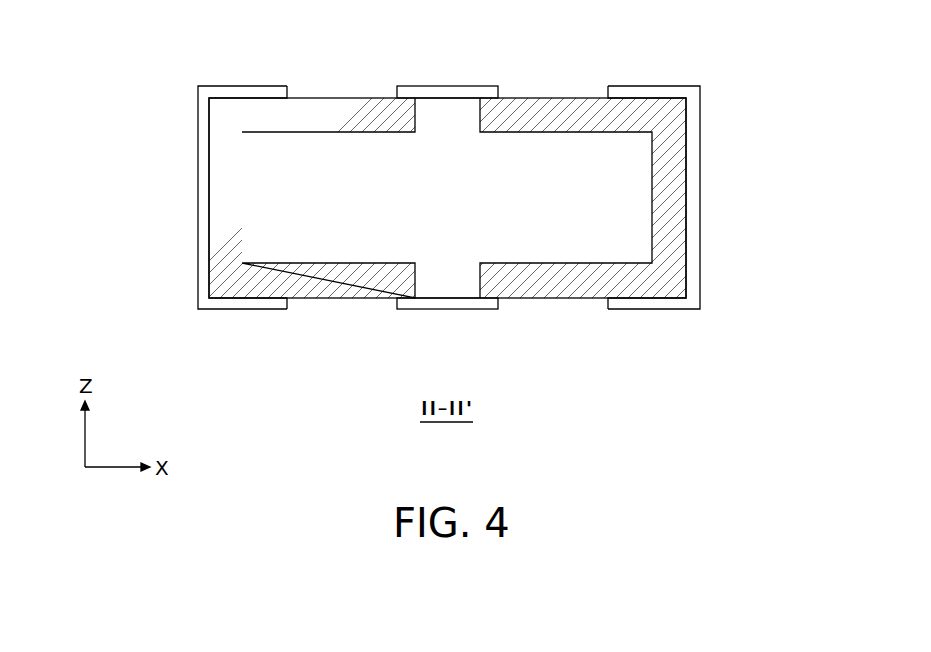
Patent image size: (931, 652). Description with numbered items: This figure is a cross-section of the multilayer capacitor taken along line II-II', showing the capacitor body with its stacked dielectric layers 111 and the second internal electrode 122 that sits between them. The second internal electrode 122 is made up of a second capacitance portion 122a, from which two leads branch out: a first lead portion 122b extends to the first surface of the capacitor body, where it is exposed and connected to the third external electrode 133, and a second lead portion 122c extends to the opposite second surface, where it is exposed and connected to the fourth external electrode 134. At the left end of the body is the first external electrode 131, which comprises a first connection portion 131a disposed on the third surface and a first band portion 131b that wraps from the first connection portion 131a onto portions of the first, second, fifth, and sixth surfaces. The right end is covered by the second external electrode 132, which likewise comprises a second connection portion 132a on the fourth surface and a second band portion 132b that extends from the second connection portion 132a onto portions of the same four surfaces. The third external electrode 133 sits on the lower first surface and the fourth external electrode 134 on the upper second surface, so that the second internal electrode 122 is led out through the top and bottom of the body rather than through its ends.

The dielectric layer 111 is at (545, 115).
The second internal electrode 122 is at (102, 142).
The second capacitance portion 122a is at (262, 202).
The 2-1st lead portion 122b is at (430, 282).
The 2-2nd lead portion 122c is at (432, 113).
The first external electrode 131 is at (166, 217).
The first connection portion 131a is at (196, 289).
The first band portion 131b is at (218, 311).
The second external electrode 132 is at (730, 217).
The second connection portion 132a is at (702, 289).
The second band portion 132b is at (680, 311).
The third external electrode 133 is at (447, 310).
The fourth external electrode 134 is at (447, 93).